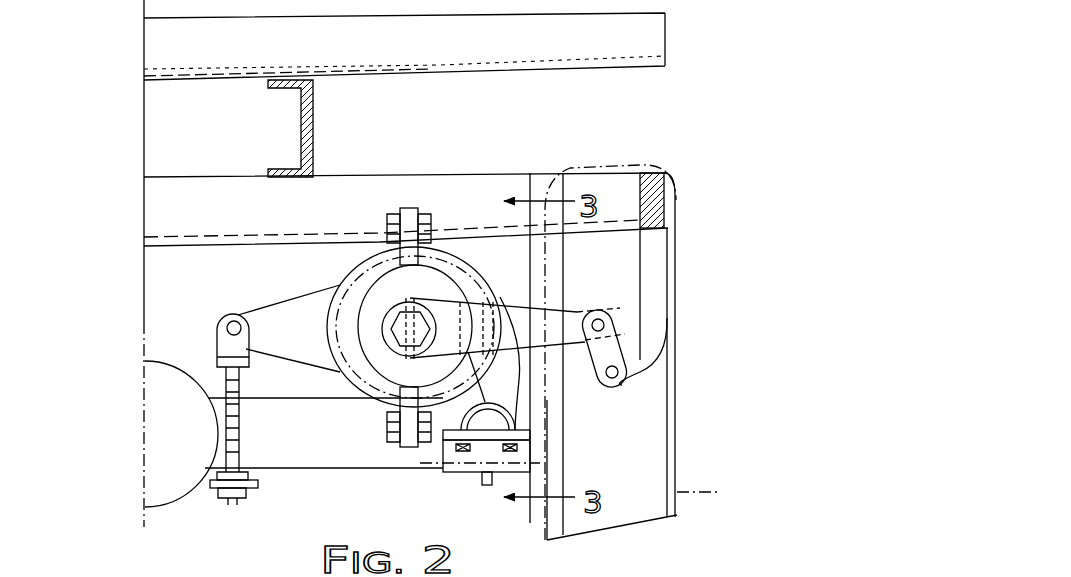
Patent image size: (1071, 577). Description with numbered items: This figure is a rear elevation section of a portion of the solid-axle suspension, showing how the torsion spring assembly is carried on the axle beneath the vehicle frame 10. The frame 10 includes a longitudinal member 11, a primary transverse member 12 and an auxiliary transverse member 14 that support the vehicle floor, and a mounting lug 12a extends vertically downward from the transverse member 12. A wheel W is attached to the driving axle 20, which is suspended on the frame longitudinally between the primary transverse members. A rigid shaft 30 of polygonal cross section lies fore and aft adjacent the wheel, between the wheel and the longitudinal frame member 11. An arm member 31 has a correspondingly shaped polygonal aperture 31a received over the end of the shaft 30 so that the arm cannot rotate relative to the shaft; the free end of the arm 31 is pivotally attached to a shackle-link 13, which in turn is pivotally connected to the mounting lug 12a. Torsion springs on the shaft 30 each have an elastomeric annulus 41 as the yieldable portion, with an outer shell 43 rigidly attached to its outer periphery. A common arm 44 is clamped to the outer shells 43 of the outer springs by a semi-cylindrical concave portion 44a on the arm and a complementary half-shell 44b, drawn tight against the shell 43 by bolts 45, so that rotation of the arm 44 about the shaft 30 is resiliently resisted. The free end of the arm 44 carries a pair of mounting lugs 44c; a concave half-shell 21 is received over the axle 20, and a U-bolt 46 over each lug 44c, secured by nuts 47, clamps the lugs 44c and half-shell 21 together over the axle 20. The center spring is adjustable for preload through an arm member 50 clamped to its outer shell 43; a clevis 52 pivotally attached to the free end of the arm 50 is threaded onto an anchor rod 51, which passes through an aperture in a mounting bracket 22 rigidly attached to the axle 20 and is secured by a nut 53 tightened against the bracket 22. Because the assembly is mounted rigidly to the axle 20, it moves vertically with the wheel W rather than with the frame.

The vehicle frame 10 is at (126, 121).
The longitudinal member 11 is at (310, 122).
The primary transverse member 12 is at (253, 192).
The mounting lug 12a is at (668, 247).
The shackle-link 13 is at (614, 343).
The auxiliary transverse member 14 is at (657, 38).
The driving axle 20 is at (288, 453).
The concave half-shell 21 is at (485, 487).
The mounting bracket 22 is at (262, 484).
The rigid shaft 30 is at (392, 340).
The arm member 31 is at (572, 318).
The polygonal aperture 31a is at (395, 315).
The elastomeric annulus 41 is at (390, 363).
The outer shell 43 is at (398, 390).
The common arm 44 is at (512, 375).
The semi-cylindrical concave portion 44a is at (437, 268).
The half-shell 44b is at (352, 332).
The mounting lugs 44c is at (517, 412).
The bolts 45 is at (411, 258).
The U-bolt 46 is at (495, 422).
The nuts 47 is at (470, 450).
The arm member 50 is at (297, 307).
The anchor rod 51 is at (229, 502).
The clevis 52 is at (220, 346).
The nut 53 is at (220, 496).
The wheel W is at (725, 494).